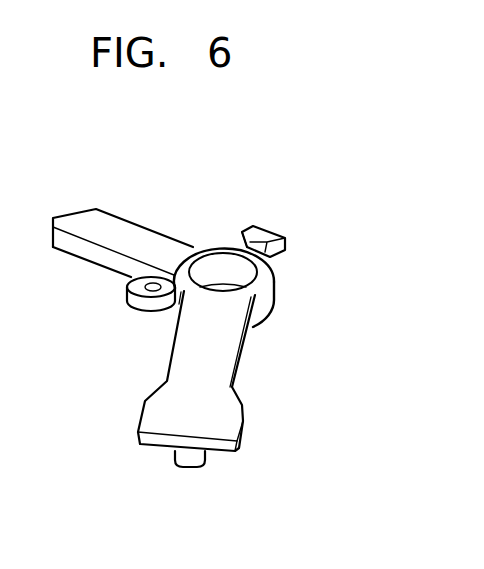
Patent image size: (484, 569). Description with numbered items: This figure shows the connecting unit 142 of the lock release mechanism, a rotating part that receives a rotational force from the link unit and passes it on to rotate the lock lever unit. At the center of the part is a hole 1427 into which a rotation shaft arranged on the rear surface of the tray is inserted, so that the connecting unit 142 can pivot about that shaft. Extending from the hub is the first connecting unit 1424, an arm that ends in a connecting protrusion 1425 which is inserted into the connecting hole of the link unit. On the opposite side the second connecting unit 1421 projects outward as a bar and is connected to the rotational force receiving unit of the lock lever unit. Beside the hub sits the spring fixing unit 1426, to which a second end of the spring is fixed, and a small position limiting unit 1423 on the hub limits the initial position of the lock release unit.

The connecting unit 142 is at (328, 265).
The second connecting unit 1421 is at (80, 220).
The position limiting unit 1423 is at (258, 230).
The first connecting unit 1424 is at (173, 386).
The connecting protrusion 1425 is at (185, 462).
The spring fixing unit 1426 is at (130, 288).
The hole 1427 is at (217, 265).